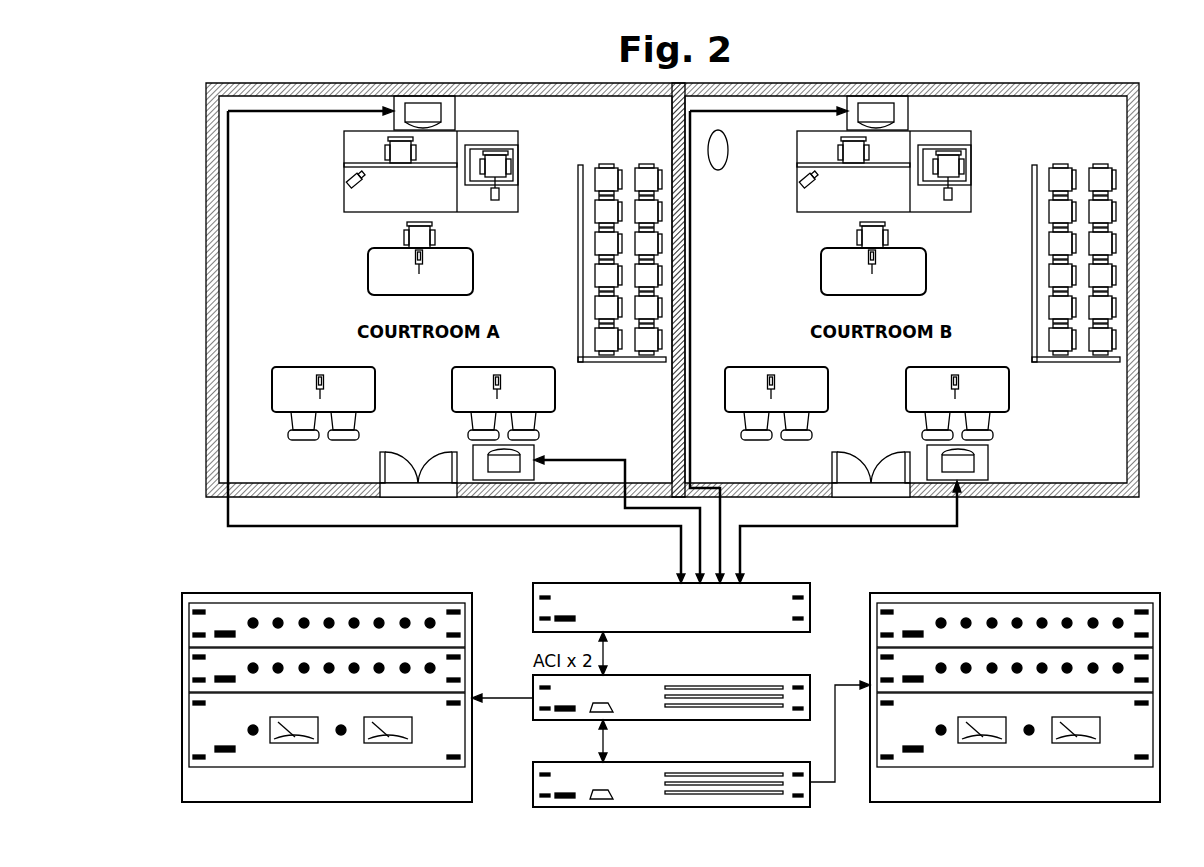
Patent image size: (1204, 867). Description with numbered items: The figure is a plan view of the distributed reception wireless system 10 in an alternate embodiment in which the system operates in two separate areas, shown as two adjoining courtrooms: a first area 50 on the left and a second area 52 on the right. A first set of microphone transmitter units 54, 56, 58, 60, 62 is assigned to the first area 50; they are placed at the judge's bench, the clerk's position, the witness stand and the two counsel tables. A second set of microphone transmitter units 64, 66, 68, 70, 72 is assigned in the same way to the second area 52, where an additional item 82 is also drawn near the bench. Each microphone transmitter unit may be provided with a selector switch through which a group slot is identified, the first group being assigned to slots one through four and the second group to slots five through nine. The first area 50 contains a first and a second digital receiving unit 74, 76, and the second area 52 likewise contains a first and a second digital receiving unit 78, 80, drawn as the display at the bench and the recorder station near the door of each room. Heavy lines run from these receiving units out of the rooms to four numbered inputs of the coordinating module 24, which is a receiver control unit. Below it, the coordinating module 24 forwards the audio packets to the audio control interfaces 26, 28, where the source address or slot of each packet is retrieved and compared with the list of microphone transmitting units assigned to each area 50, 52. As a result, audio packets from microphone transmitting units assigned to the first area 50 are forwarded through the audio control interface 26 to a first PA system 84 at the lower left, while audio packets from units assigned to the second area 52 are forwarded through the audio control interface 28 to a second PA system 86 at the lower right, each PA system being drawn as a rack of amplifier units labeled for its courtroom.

The distributed reception wireless system 10 is at (862, 826).
The coordinating module 24 is at (810, 595).
The audio control interface 26 is at (810, 676).
The audio control interface 28 is at (810, 800).
The first area 50 is at (556, 83).
The second area 52 is at (1082, 83).
The microphone transmitter unit 54 is at (348, 180).
The microphone transmitter unit 56 is at (500, 193).
The microphone transmitter unit 58 is at (415, 258).
The microphone transmitter unit 60 is at (317, 383).
The microphone transmitter unit 62 is at (494, 383).
The microphone transmitter unit 64 is at (806, 177).
The microphone transmitter unit 66 is at (953, 192).
The microphone transmitter unit 68 is at (876, 258).
The microphone transmitter unit 70 is at (774, 385).
The microphone transmitter unit 72 is at (959, 385).
The first digital receiving unit 74 is at (456, 112).
The second digital receiving unit 76 is at (534, 470).
The first digital receiving unit 78 is at (908, 118).
The second digital receiving unit 80 is at (988, 465).
The ceiling speaker courtroom B 82 is at (728, 150).
The first PA system 84 is at (418, 803).
The second PA system 86 is at (1048, 803).